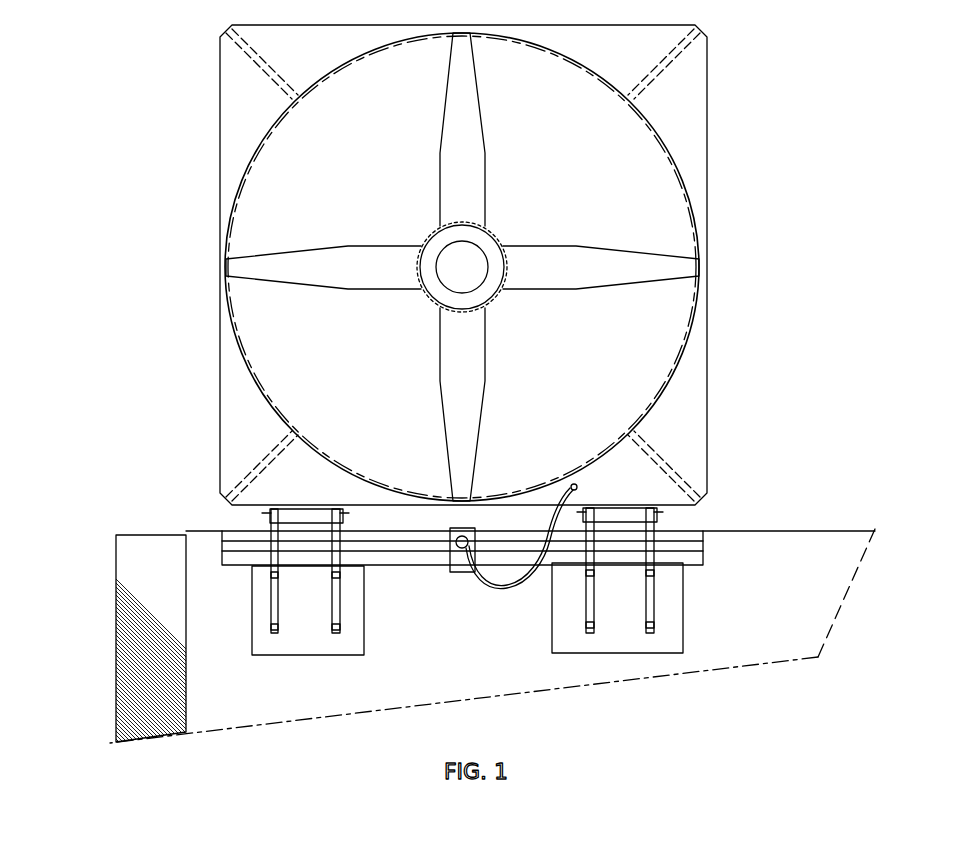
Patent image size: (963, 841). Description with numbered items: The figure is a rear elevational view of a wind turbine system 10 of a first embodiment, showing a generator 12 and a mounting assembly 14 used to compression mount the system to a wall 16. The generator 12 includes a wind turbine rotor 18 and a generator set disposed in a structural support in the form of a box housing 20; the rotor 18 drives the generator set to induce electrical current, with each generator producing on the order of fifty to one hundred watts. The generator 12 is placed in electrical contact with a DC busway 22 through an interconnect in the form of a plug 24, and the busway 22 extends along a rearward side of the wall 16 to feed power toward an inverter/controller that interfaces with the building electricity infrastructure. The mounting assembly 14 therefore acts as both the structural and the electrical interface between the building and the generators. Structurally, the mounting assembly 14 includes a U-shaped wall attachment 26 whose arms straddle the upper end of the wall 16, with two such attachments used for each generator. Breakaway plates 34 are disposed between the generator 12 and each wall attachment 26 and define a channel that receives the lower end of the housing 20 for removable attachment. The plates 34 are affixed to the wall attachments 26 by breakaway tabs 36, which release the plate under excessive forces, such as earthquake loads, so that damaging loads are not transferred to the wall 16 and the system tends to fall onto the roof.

The wind turbine system 10 is at (158, 126).
The generator 12 is at (547, 267).
The mounting assembly 14 is at (776, 613).
The wall 16 is at (115, 598).
The wind turbine rotor 18 is at (494, 263).
The box housing 20 is at (707, 123).
The DC busway 22 is at (705, 556).
The plug 24 is at (464, 540).
The U-shaped wall attachment 26 is at (272, 607).
The breakaway plates 34 is at (333, 521).
The breakaway tabs 36 is at (272, 523).